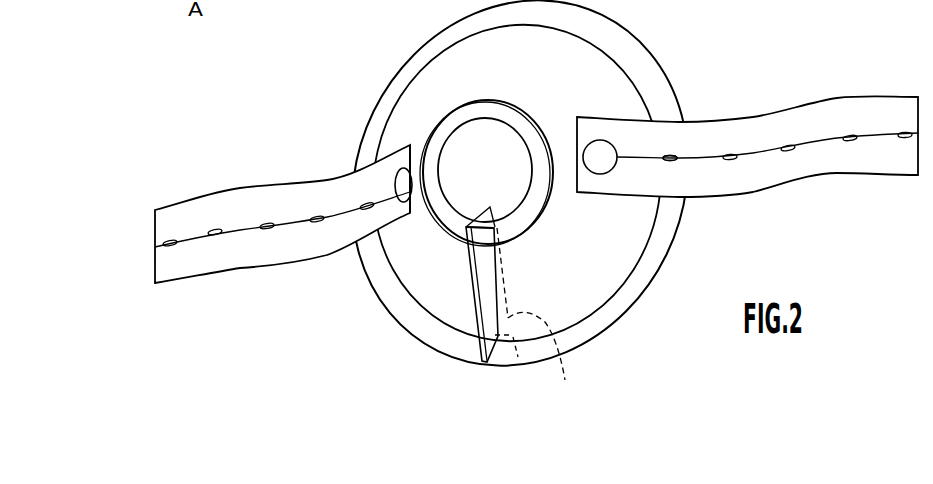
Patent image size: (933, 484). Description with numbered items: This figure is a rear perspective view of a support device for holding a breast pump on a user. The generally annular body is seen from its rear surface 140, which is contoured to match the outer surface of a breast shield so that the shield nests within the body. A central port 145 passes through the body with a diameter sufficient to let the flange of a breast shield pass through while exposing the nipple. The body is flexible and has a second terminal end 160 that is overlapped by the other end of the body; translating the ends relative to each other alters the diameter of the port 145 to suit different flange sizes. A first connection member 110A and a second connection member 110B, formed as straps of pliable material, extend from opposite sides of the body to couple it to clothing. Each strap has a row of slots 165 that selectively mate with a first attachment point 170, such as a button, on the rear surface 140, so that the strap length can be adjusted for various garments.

The first connection member 110A is at (868, 115).
The second connection member 110B is at (195, 220).
The rear surface 140 is at (542, 75).
The port 145 is at (470, 168).
The second terminal end 160 is at (522, 306).
The slots 165 is at (670, 157).
The first attachment point 170 is at (603, 153).